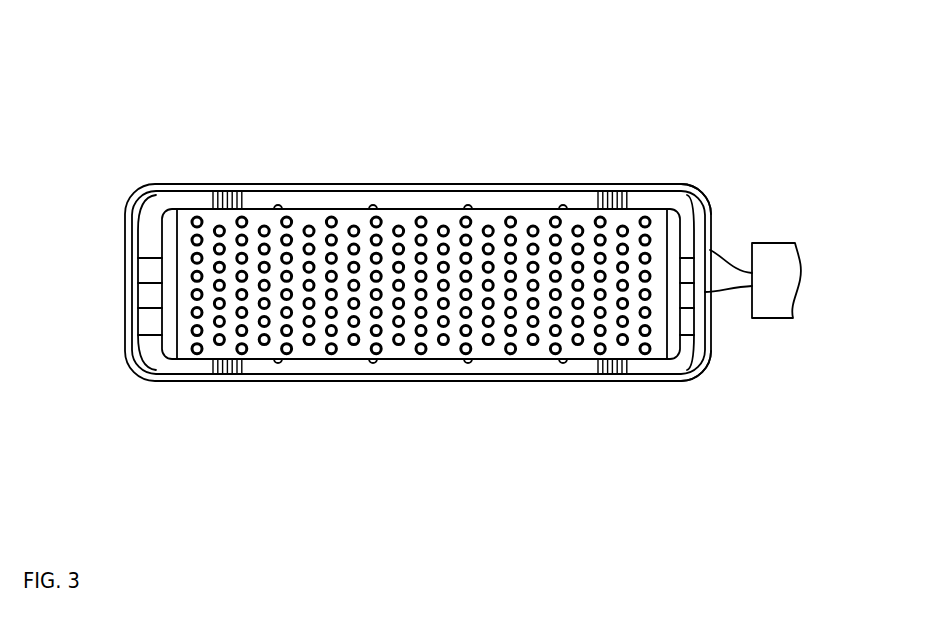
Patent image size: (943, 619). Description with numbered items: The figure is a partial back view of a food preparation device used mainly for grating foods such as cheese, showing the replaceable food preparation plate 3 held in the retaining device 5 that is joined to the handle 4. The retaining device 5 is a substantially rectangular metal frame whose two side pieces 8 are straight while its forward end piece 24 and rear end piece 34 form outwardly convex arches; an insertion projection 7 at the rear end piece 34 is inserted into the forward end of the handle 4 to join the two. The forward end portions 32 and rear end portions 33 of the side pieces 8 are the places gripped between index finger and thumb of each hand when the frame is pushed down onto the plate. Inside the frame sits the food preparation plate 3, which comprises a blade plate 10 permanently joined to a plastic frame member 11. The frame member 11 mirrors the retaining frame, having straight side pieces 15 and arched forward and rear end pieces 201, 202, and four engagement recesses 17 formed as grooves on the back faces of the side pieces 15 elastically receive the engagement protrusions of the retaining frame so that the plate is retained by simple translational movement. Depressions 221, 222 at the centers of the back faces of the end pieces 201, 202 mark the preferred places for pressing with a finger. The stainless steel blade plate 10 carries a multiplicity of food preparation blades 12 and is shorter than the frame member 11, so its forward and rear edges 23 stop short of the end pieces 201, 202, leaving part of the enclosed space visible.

The food preparation plate 3 is at (490, 212).
The handle 4 is at (787, 243).
The retaining device 5 is at (418, 292).
The insertion projection 7 is at (742, 290).
The side pieces 8 is at (412, 193).
The blade plate 10 is at (352, 217).
The frame member 11 is at (323, 367).
The food preparation blades 12 is at (308, 222).
The side pieces 15 is at (448, 203).
The engagement recesses 17 is at (223, 207).
The forward and rear edges 23 is at (173, 247).
The forward end piece 24 is at (127, 272).
The forward end portions 32 is at (178, 188).
The rear end portions 33 is at (668, 185).
The rear end piece 34 is at (710, 230).
The forward end piece 201 is at (145, 337).
The rear end piece 202 is at (693, 337).
The depression 221 is at (140, 285).
The depression 222 is at (700, 280).